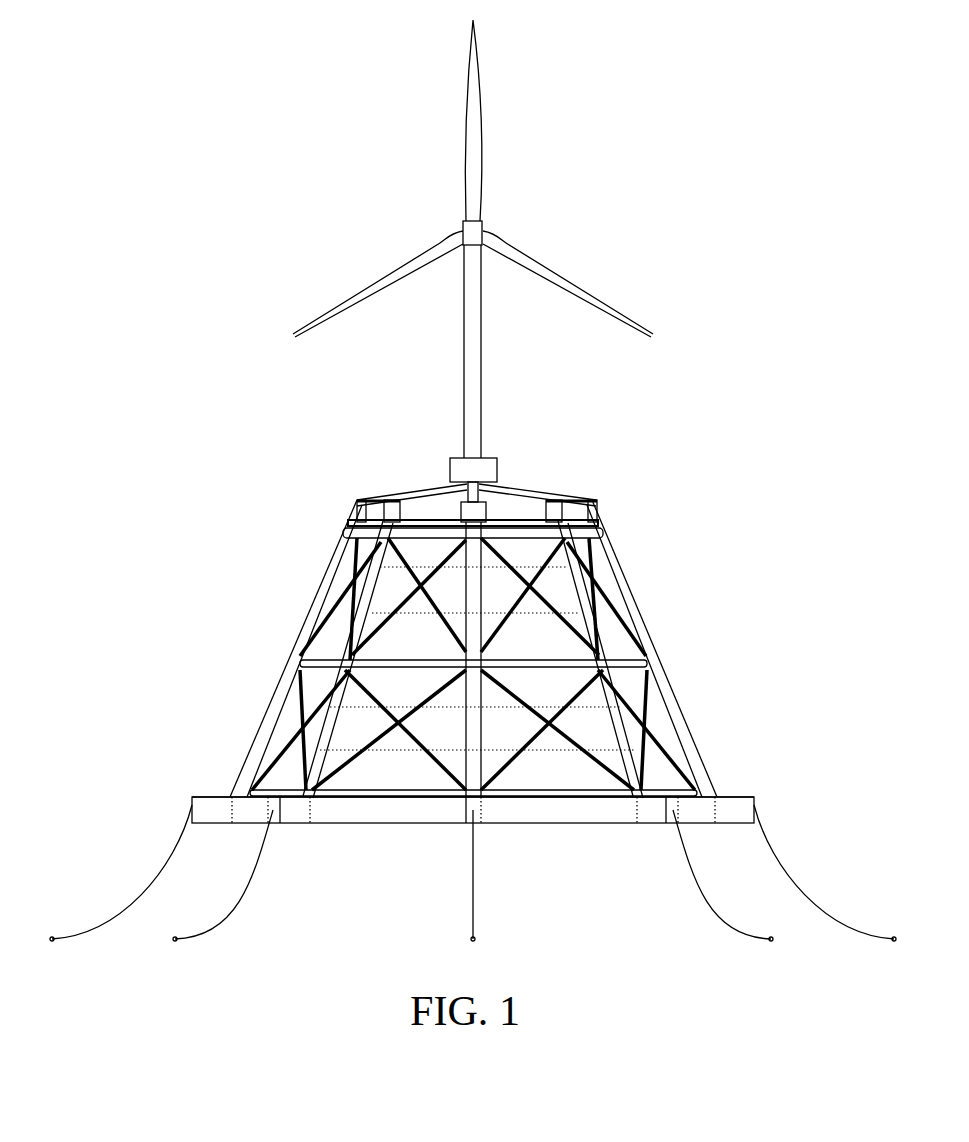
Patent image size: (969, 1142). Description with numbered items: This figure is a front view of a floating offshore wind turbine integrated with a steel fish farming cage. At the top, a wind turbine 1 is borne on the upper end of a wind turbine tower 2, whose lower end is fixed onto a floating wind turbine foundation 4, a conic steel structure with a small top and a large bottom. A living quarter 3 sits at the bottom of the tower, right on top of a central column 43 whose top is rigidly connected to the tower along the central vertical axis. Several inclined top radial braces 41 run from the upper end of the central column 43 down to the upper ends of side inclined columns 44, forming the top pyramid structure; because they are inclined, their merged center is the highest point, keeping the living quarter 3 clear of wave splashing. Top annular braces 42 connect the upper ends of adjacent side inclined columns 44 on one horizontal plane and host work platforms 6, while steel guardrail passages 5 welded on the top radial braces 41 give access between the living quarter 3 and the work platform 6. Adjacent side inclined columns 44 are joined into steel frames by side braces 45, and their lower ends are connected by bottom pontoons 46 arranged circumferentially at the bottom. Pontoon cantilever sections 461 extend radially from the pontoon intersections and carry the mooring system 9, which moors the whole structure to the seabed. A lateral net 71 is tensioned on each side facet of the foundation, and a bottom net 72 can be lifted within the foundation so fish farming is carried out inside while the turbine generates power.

The wind turbine 1 is at (483, 222).
The wind turbine tower 2 is at (483, 412).
The living quarter 3 is at (498, 463).
The floating wind turbine foundation 4 is at (340, 556).
The steel guardrail passage 5 is at (376, 507).
The work platform 6 is at (394, 497).
The mooring system 9 is at (777, 853).
The top radial brace 41 is at (443, 490).
The top annular brace 42 is at (596, 510).
The central column 43 is at (548, 490).
The side inclined column 44 is at (620, 563).
The side brace 45 is at (652, 712).
The bottom pontoon 46 is at (590, 823).
The lateral net 71 is at (522, 650).
The bottom net 72 is at (533, 823).
The pontoon cantilever section 461 is at (740, 796).